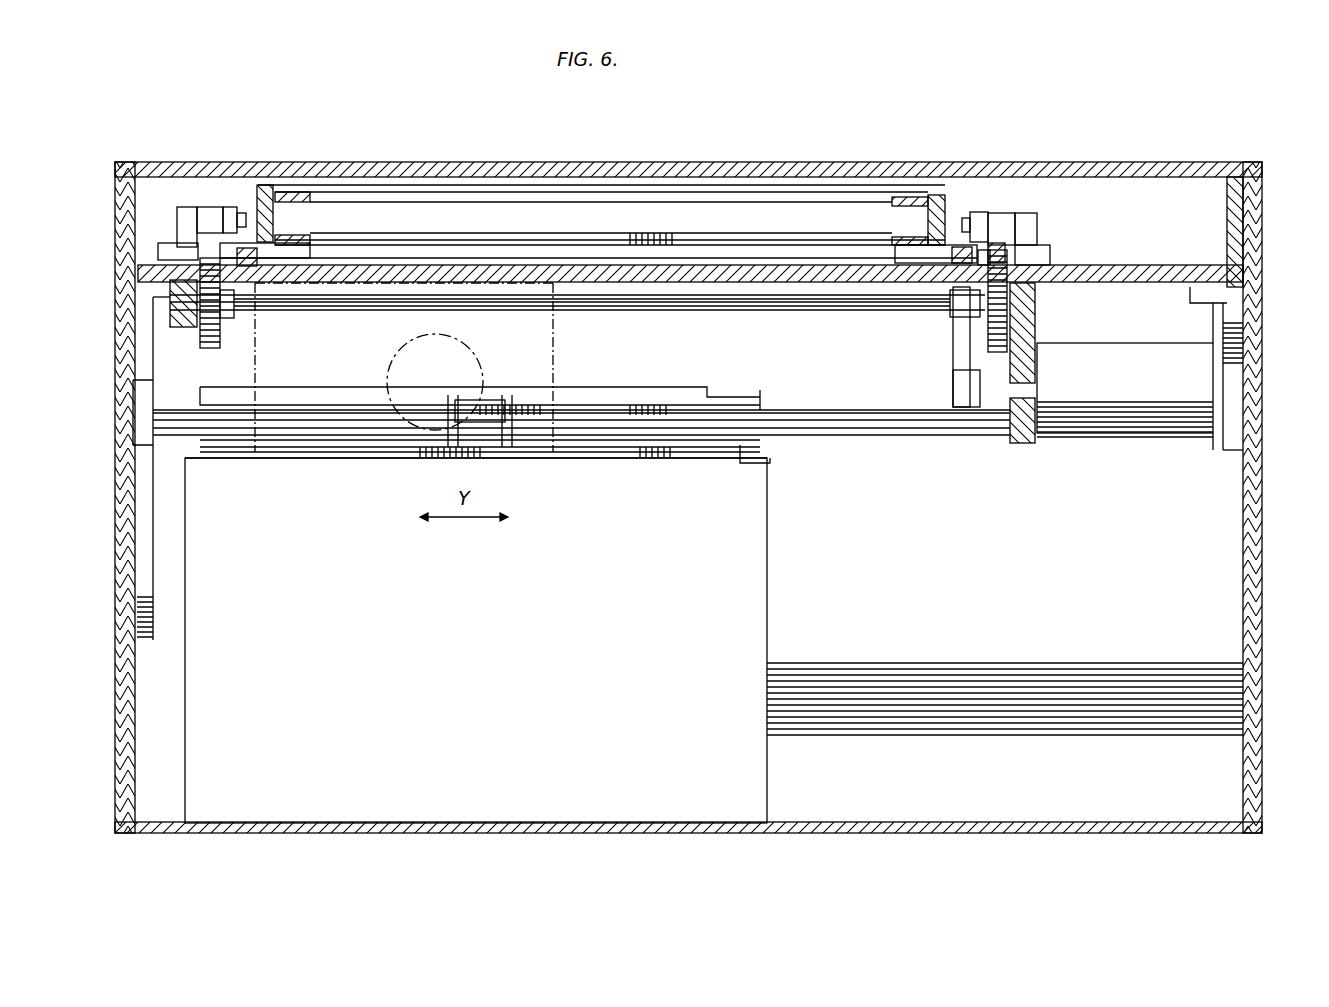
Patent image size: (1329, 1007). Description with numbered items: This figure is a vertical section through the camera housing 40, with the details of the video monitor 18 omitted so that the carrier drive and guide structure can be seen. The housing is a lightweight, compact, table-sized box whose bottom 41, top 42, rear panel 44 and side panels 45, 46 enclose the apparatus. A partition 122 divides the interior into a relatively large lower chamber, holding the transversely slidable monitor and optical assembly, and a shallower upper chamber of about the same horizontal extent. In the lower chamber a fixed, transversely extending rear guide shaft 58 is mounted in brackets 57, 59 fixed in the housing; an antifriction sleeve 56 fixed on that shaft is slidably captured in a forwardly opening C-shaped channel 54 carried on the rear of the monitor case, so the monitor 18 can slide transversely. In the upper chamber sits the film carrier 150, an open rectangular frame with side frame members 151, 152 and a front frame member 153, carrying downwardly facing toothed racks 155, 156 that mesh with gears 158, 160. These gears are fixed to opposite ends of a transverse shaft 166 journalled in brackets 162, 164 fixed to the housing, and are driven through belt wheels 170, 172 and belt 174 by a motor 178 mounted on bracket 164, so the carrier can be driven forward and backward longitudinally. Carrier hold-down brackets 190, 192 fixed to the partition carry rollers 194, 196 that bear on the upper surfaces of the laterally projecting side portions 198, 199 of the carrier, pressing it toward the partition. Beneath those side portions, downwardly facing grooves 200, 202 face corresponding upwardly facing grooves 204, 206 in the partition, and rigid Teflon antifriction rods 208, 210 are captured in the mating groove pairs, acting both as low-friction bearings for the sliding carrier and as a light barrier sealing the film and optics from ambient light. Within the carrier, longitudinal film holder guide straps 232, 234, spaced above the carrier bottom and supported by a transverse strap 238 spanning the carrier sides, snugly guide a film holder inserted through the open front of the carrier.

The video monitor 18 is at (790, 650).
The camera housing 40 is at (302, 848).
The bottom 41 is at (592, 834).
The top 42 is at (675, 175).
The rear panel 44 is at (1222, 663).
The side panel 45 is at (120, 508).
The side panel 46 is at (1260, 594).
The C-shaped channel 54 is at (596, 396).
The antifriction sleeve 56 is at (494, 398).
The bracket 57 is at (133, 382).
The rear guide shaft 58 is at (828, 412).
The bracket 59 is at (1226, 452).
The partition 122 is at (643, 290).
The film carrier 150 is at (575, 207).
The side frame member 151 is at (268, 192).
The side frame member 152 is at (940, 197).
The front frame member 153 is at (458, 198).
The toothed rack 155 is at (208, 252).
The toothed rack 156 is at (1020, 250).
The gear 158 is at (210, 348).
The gear 160 is at (1000, 343).
The bracket 162 is at (175, 315).
The bracket 164 is at (1025, 445).
The transverse shaft 166 is at (705, 312).
The belt wheel 170 is at (953, 322).
The belt wheel 172 is at (953, 380).
The belt 174 is at (958, 350).
The motor 178 is at (1145, 384).
The carrier hold-down bracket 190 is at (178, 218).
The carrier hold-down bracket 192 is at (1005, 215).
The roller 194 is at (232, 210).
The roller 196 is at (975, 215).
The side portion 198 is at (228, 250).
The side portion 199 is at (995, 260).
The groove 200 is at (258, 248).
The groove 202 is at (950, 255).
The groove 204 is at (256, 258).
The groove 206 is at (936, 254).
The antifriction rod 208 is at (248, 265).
The antifriction rod 210 is at (955, 278).
The film holder guide strap 232 is at (305, 194).
The film holder guide strap 234 is at (895, 199).
The transverse strap 238 is at (778, 193).